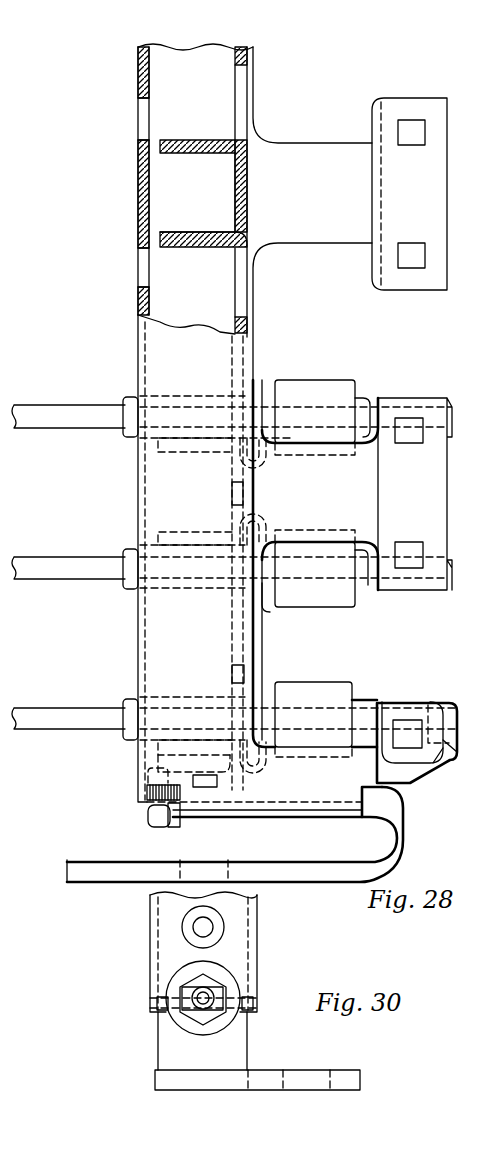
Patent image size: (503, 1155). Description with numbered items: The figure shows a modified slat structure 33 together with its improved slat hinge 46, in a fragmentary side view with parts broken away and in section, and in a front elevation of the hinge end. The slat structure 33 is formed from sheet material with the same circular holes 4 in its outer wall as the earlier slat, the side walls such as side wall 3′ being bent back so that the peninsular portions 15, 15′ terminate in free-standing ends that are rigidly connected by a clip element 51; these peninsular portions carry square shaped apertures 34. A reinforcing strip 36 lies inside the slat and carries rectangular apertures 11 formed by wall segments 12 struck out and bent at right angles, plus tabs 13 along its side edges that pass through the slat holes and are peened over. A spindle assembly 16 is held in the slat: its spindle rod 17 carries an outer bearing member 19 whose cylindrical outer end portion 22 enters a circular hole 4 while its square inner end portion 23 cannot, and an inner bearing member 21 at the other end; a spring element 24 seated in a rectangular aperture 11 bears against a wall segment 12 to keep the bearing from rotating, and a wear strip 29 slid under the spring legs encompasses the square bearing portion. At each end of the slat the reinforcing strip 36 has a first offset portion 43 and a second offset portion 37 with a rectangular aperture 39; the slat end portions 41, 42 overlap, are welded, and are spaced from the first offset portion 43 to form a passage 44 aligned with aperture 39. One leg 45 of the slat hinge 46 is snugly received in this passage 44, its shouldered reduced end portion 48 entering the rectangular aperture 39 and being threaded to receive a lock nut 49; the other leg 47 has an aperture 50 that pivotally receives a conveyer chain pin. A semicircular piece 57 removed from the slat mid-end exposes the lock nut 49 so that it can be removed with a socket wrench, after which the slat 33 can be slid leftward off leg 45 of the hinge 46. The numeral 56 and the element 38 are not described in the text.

In FIG. 28, the side wall 3′ is at (236, 369).
In FIG. 28, the circular hole 4 is at (137, 268).
In FIG. 28, the rectangular aperture 11 is at (241, 296).
In FIG. 28, the wall segment 12 is at (180, 230).
In FIG. 28, the tab 13 is at (232, 494).
In FIG. 28, the peninsular portion 15 is at (362, 513).
In FIG. 28, the peninsular portion 15′ is at (368, 143).
In FIG. 28, the spindle assembly 16 is at (331, 613).
In FIG. 28, the spindle rod 17 is at (66, 412).
In FIG. 30, the spindle rod 17 is at (196, 921).
In FIG. 28, the outer bearing member 19 is at (292, 635).
In FIG. 28, the inner bearing member 21 is at (366, 587).
In FIG. 28, the outer end portion 22 is at (127, 438).
In FIG. 30, the outer end portion 22 is at (206, 938).
In FIG. 28, the inner end portion 23 is at (200, 592).
In FIG. 28, the spring element 24 is at (263, 683).
In FIG. 28, the wear strip 29 is at (256, 653).
In FIG. 28, the slat structure 33 is at (137, 331).
In FIG. 30, the slat structure 33 is at (298, 910).
In FIG. 28, the square shaped aperture 34 is at (410, 245).
In FIG. 28, the reinforcing strip 36 is at (296, 333).
In FIG. 28, the second offset portion 37 is at (164, 826).
In FIG. 30, the second offset portion 37 is at (192, 1030).
In FIG. 28, the flange 38 is at (248, 200).
In FIG. 30, the rectangular aperture 39 is at (225, 1000).
In FIG. 28, the end portion 41 is at (335, 804).
In FIG. 30, the end portion 41 is at (250, 1010).
In FIG. 28, the end portion 42 is at (290, 817).
In FIG. 30, the end portion 42 is at (225, 1030).
In FIG. 28, the first offset portion 43 is at (168, 781).
In FIG. 30, the first offset portion 43 is at (226, 985).
In FIG. 28, the passage 44 is at (245, 805).
In FIG. 28, the leg 45 is at (292, 792).
In FIG. 28, the slat hinge 46 is at (418, 872).
In FIG. 30, the slat hinge 46 is at (160, 1068).
In FIG. 28, the leg 47 is at (67, 868).
In FIG. 30, the leg 47 is at (362, 1076).
In FIG. 28, the reduced end portion 48 is at (147, 790).
In FIG. 30, the reduced end portion 48 is at (196, 1003).
In FIG. 28, the lock nut 49 is at (150, 815).
In FIG. 30, the lock nut 49 is at (160, 1000).
In FIG. 28, the aperture 50 is at (183, 866).
In FIG. 30, the aperture 50 is at (328, 1073).
In FIG. 28, the clip element 51 is at (496, 709).
In FIG. 28, the tab 56 is at (403, 748).
In FIG. 28, the semicircular piece 57 is at (143, 758).
In FIG. 30, the semicircular piece 57 is at (190, 968).